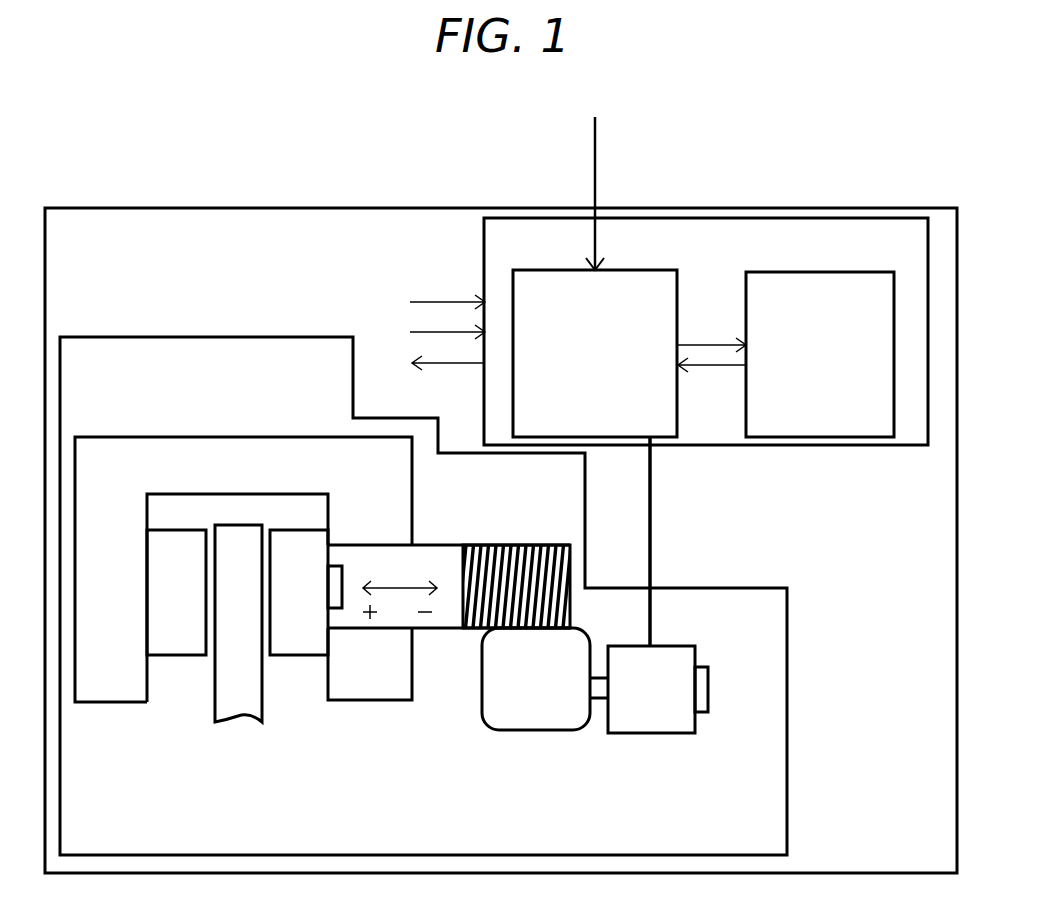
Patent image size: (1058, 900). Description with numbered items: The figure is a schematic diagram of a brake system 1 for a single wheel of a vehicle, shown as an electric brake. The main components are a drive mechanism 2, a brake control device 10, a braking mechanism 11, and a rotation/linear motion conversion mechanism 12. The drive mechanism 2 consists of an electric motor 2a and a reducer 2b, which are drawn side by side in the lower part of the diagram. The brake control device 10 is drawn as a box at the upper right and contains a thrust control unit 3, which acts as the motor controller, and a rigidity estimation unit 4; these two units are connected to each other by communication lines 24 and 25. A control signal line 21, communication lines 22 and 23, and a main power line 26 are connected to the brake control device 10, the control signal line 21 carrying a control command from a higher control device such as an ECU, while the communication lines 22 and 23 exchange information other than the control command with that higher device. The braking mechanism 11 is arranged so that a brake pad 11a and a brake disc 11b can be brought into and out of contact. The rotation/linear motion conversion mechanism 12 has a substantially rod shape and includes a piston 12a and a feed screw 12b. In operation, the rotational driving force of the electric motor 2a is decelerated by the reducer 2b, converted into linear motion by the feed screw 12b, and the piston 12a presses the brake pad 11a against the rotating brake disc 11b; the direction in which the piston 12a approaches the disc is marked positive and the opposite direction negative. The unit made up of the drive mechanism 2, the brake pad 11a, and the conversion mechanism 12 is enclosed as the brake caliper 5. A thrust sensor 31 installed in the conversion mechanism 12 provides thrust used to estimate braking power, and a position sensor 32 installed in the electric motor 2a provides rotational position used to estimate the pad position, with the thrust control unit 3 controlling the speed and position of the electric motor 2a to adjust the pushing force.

The brake system 1 is at (343, 208).
The brake control device 10 is at (862, 218).
The thrust control unit 3 is at (600, 437).
The rigidity estimation unit 4 is at (822, 437).
The brake caliper 5 is at (706, 588).
The braking mechanism 11 is at (215, 399).
The brake pad 11a is at (297, 530).
The brake disc 11b is at (237, 525).
The rotation/linear motion conversion mechanism 12 is at (547, 501).
The piston 12a is at (437, 545).
The feed screw 12b is at (510, 545).
The drive mechanism 2 is at (513, 800).
The electric motor 2a is at (650, 735).
The reducer 2b is at (538, 732).
The thrust sensor 31 is at (342, 578).
The position sensor 32 is at (710, 690).
The control signal line 21 is at (433, 301).
The communication line 22 is at (433, 333).
The communication line 23 is at (433, 363).
The communication line 24 is at (706, 340).
The communication line 25 is at (716, 370).
The main power line 26 is at (598, 148).